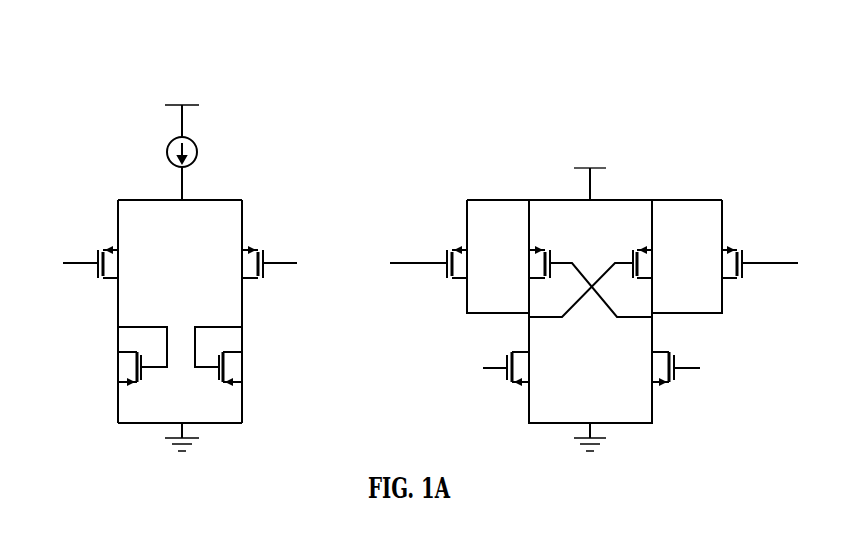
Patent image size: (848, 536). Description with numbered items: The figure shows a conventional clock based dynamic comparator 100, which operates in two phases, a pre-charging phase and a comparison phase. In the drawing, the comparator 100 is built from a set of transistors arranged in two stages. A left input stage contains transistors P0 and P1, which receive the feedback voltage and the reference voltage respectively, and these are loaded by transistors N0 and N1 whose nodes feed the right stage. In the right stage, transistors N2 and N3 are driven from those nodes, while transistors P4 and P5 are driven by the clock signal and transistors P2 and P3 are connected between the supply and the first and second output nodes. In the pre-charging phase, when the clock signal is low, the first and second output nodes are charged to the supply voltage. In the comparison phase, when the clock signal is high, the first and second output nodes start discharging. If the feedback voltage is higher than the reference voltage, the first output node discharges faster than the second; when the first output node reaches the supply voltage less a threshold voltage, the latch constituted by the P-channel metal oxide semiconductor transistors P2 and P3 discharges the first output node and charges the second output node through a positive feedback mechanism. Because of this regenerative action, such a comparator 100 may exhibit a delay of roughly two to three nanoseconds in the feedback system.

The clock based dynamic comparator 100 is at (87, 93).
The input PMOS transistor P0 is at (105, 262).
The reference PMOS transistor P1 is at (253, 262).
The diode-connected NMOS load transistor N0 is at (127, 356).
The diode-connected NMOS load transistor N1 is at (232, 356).
The PMOS transistor P2 is at (577, 281).
The PMOS transistor P3 is at (602, 281).
The clocked PMOS reset transistor P4 is at (439, 262).
The clocked PMOS reset transistor P5 is at (747, 262).
The NMOS input transistor of latch N2 is at (520, 369).
The NMOS input transistor of latch N3 is at (661, 369).